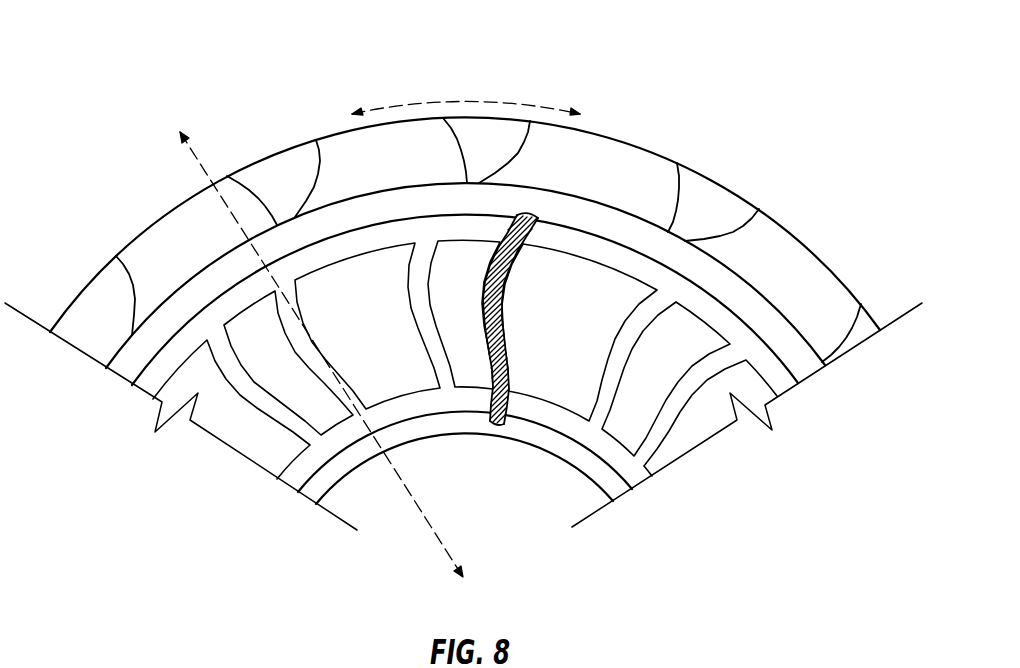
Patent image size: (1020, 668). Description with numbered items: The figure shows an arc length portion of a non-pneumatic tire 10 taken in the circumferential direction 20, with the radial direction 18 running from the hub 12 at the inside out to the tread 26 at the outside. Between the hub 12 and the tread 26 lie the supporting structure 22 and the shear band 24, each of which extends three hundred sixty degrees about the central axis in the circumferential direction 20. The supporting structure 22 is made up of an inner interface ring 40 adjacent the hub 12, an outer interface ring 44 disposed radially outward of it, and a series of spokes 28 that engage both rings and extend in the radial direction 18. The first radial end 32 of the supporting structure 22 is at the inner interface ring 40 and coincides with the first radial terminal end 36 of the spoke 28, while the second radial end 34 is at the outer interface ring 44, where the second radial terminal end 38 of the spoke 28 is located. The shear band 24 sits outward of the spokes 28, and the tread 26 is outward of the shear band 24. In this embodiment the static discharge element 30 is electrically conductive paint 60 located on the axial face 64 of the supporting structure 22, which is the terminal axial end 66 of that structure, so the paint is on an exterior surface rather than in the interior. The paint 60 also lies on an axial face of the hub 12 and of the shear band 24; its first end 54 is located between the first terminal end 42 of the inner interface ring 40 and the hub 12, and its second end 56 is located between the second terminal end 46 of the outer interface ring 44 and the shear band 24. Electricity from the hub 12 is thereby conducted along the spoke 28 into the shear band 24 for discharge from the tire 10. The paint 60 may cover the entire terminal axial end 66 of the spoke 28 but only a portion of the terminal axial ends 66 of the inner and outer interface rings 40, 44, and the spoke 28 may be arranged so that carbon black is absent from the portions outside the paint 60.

The non-pneumatic tire 10 is at (112, 52).
The hub 12 is at (598, 477).
The radial direction 18 is at (437, 535).
The circumferential direction 20 is at (472, 102).
The supporting structure 22 is at (534, 363).
The shear band 24 is at (504, 293).
The tread 26 is at (483, 243).
The spoke 28 is at (513, 327).
The static discharge element 30 is at (488, 317).
The first radial end 32 is at (333, 443).
The second radial end 34 is at (214, 295).
The first radial terminal end 36 is at (503, 393).
The second radial terminal end 38 is at (520, 250).
The inner interface ring 40 is at (502, 466).
The first terminal end 42 is at (525, 421).
The outer interface ring 44 is at (788, 383).
The second terminal end 46 is at (476, 293).
The first end 54 is at (496, 424).
The second end 56 is at (528, 212).
The electrically conductive paint 60 is at (500, 309).
The axial face 64 is at (758, 337).
The terminal axial end 66 is at (706, 317).